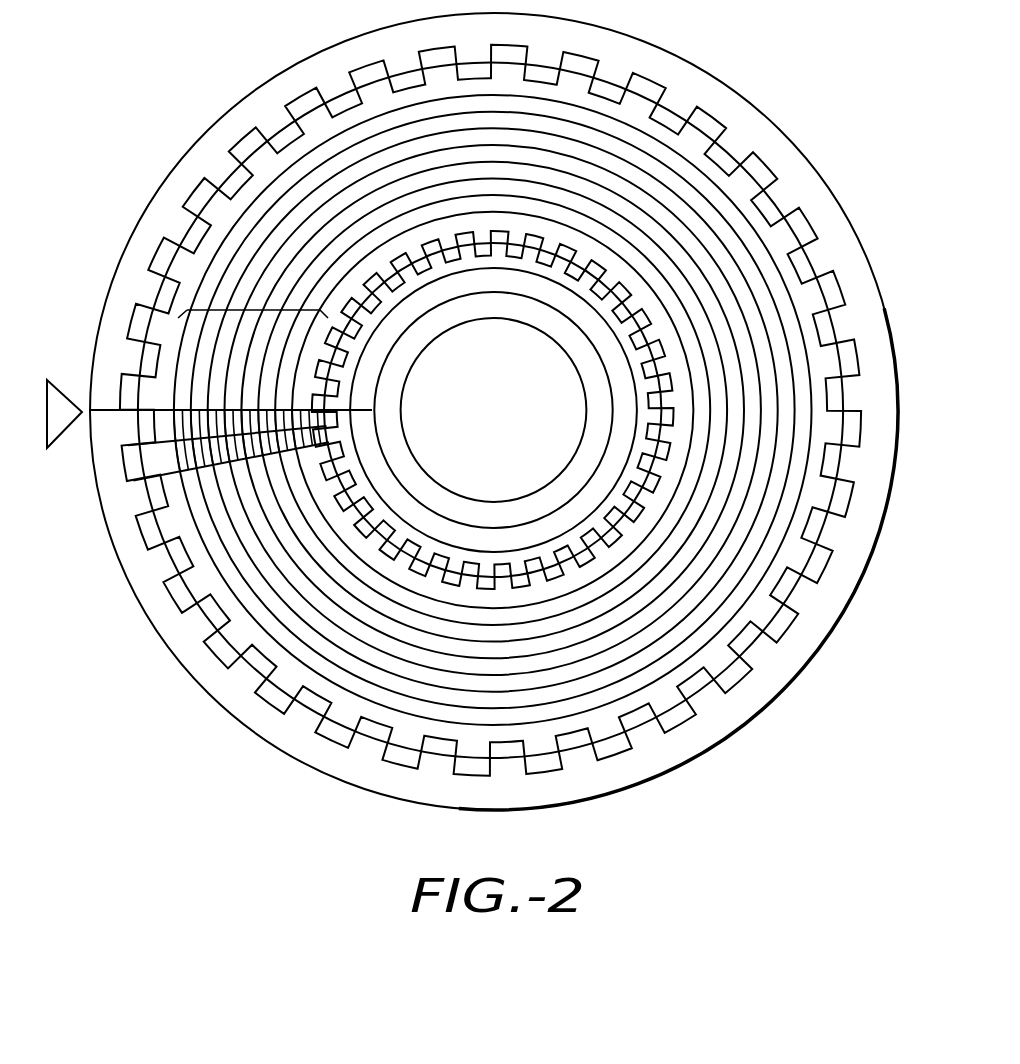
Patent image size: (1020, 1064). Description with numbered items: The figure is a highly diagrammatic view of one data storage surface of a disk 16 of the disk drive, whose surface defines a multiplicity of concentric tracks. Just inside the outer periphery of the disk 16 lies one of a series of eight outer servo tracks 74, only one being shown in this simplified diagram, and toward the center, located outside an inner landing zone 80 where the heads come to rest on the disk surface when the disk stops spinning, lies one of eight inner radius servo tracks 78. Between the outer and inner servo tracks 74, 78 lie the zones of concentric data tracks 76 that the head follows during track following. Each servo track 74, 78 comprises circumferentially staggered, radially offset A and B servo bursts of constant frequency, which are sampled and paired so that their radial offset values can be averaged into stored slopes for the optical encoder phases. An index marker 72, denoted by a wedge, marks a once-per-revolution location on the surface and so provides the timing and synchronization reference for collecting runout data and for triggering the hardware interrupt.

The disk 16 is at (766, 710).
The index marker 72 is at (57, 406).
The outer servo tracks 74 is at (182, 230).
The concentric data tracks 76 is at (250, 308).
The inner radius servo tracks 78 is at (368, 290).
The inner landing zone 80 is at (590, 338).